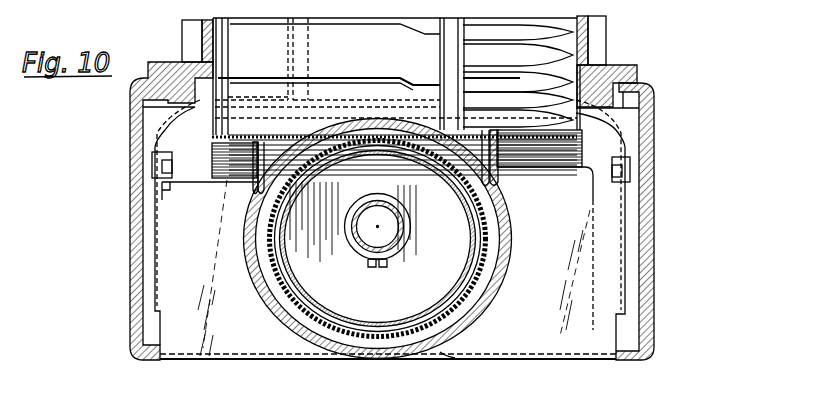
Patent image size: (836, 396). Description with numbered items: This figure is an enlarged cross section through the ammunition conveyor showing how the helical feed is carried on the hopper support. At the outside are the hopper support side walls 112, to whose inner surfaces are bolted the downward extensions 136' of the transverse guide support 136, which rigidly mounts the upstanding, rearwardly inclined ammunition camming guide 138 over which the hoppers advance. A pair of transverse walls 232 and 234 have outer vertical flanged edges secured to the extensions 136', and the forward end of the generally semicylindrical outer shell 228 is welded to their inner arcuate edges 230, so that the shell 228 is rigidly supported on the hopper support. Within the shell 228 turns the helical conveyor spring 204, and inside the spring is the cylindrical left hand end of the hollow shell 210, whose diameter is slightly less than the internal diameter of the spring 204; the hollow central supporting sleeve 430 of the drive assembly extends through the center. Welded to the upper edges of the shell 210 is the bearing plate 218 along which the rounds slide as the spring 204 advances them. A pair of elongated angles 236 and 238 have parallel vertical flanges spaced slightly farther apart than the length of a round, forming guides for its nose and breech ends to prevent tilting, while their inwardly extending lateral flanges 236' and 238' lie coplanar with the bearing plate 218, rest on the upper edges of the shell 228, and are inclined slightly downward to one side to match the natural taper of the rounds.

The hopper support side walls 112 is at (133, 253).
The transverse guide support 136 is at (290, 78).
The downward extensions 136' is at (388, 221).
The ammunition camming guide 138 is at (300, 45).
The helical conveyor spring 204 is at (445, 299).
The hollow shell 210 is at (470, 281).
The bearing plate 218 is at (358, 168).
The semicylindrical shell 228 is at (443, 353).
The inner arcuate edges 230 is at (247, 256).
The transverse wall 232 is at (183, 354).
The transverse wall 234 is at (564, 358).
The elongated angle 236 is at (221, 168).
The lateral flange 236' is at (209, 193).
The elongated angle 238 is at (550, 244).
The lateral flange 238' is at (532, 161).
The central supporting sleeve 430 is at (403, 222).